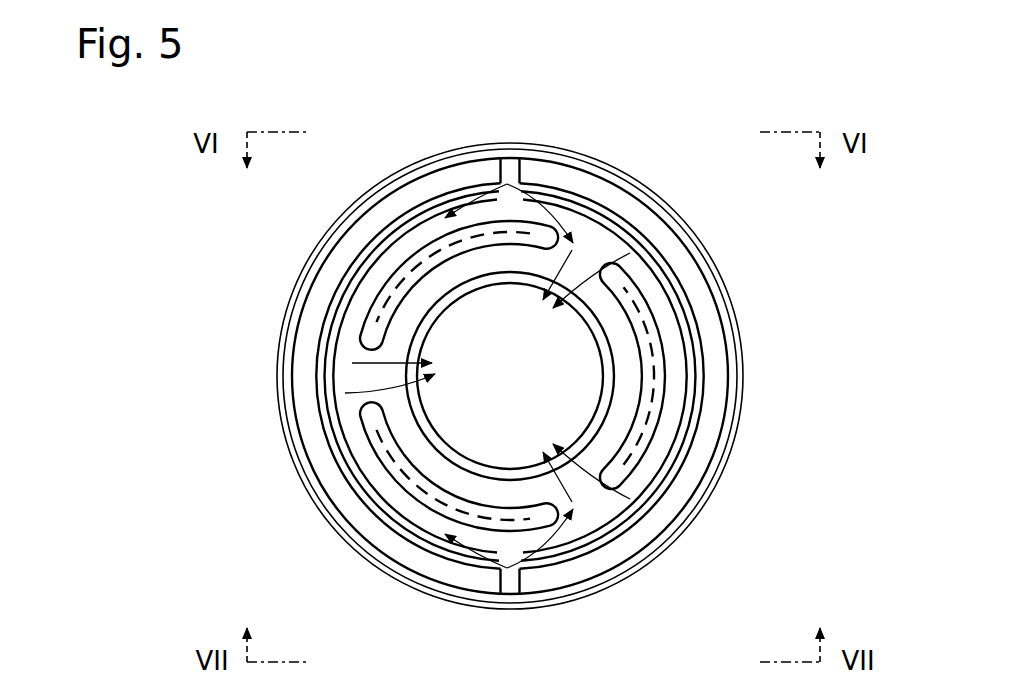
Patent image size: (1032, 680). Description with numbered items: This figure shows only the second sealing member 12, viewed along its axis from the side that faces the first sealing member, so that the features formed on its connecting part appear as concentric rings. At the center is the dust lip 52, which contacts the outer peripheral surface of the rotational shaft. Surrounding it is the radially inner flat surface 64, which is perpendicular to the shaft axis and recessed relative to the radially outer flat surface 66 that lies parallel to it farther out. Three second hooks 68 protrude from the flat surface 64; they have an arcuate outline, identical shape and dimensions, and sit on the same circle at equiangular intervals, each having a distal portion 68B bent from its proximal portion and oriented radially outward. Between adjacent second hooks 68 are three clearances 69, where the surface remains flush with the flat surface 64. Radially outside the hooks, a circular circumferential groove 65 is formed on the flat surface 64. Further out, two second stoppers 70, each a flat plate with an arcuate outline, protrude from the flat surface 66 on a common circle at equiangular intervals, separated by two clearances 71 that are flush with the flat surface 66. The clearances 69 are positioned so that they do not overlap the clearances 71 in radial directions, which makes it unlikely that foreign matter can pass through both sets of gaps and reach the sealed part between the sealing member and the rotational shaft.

The second sealing member 12 is at (459, 136).
The dust lip 52 is at (443, 435).
The radially inner flat surface 64 is at (345, 400).
The circumferential groove 65 is at (437, 227).
The radially outer flat surface 66 is at (455, 603).
The second hooks 68 is at (378, 300).
The distal portion 68B is at (425, 252).
The clearances between second hooks 69 is at (593, 252).
The second stoppers 70 is at (648, 240).
The clearances between second stoppers 71 is at (507, 165).